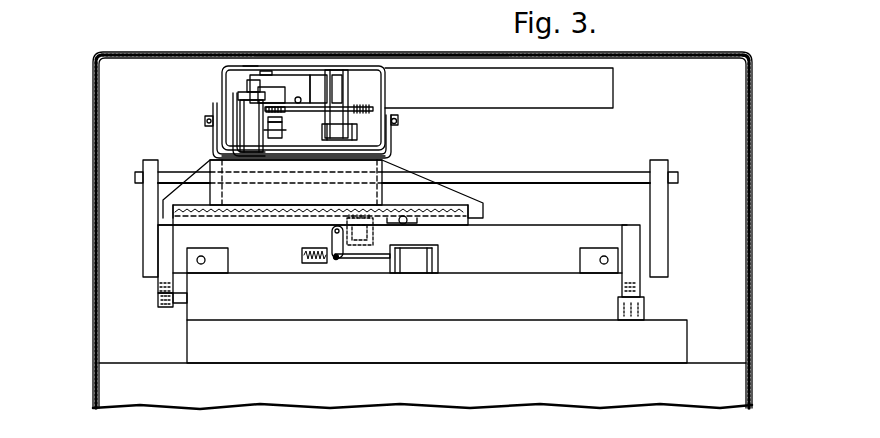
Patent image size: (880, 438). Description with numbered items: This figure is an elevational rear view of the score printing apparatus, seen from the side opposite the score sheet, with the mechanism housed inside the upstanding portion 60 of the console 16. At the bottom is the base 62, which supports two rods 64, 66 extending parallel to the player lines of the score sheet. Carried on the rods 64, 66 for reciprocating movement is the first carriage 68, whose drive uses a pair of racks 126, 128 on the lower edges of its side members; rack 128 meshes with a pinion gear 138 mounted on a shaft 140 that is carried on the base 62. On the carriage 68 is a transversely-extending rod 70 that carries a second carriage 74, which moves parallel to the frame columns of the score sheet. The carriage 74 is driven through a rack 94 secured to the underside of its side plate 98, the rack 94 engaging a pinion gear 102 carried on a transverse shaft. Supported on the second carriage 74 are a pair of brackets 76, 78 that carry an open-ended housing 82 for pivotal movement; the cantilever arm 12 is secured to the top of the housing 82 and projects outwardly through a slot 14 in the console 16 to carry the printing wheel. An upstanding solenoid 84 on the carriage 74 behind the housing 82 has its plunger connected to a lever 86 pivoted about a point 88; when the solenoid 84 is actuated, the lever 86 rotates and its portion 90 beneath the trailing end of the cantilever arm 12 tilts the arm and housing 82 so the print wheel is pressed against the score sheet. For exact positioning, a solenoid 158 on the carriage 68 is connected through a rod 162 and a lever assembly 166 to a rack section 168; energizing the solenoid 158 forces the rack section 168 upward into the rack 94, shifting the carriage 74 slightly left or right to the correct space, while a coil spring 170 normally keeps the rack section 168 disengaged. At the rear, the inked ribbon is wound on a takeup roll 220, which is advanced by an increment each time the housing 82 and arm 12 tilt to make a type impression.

The cantilever arm 12 is at (341, 87).
The slot 14 is at (548, 103).
The console 16 is at (99, 354).
The upstanding portion 60 is at (375, 64).
The base 62 is at (456, 348).
The rod 64 is at (204, 265).
The rod 66 is at (601, 265).
The first carriage 68 is at (521, 259).
The rod 70 is at (571, 172).
The second carriage 74 is at (310, 199).
The bracket 76 is at (392, 139).
The bracket 78 is at (213, 136).
The open-ended housing 82 is at (245, 65).
The solenoid 84 is at (247, 112).
The lever 86 is at (290, 82).
The pivot point 88 is at (297, 104).
The lever portion 90 is at (341, 106).
The rack 94 is at (277, 217).
The side plate 98 is at (412, 170).
The pinion gear 102 is at (408, 226).
The rack 126 is at (640, 288).
The rack 128 is at (159, 287).
The pinion gear 138 is at (169, 301).
The shaft 140 is at (182, 302).
The solenoid 158 is at (418, 268).
The rod 162 is at (358, 259).
The lever assembly 166 is at (331, 233).
The rack section 168 is at (364, 219).
The coil spring 170 is at (315, 264).
The takeup roll 220 is at (397, 124).